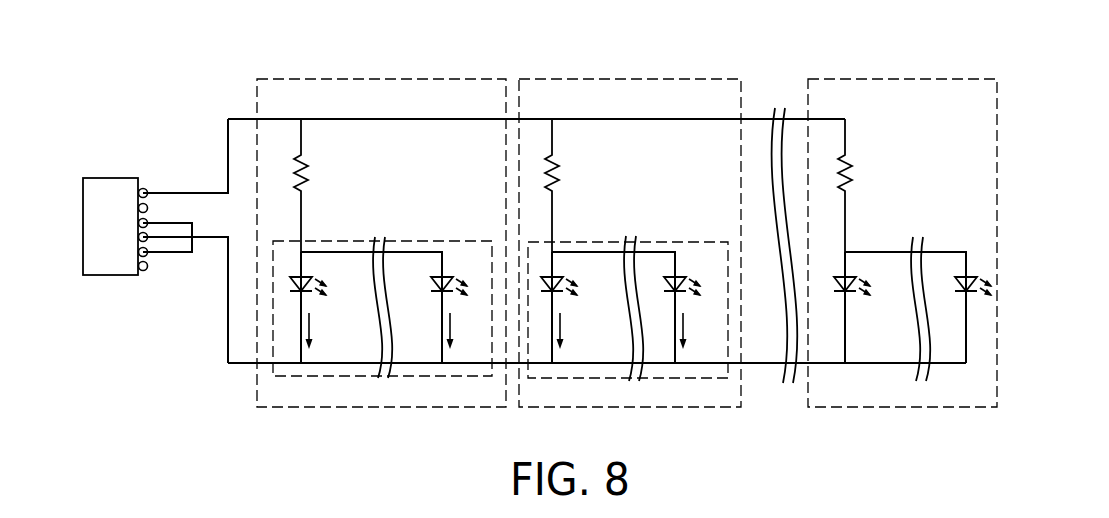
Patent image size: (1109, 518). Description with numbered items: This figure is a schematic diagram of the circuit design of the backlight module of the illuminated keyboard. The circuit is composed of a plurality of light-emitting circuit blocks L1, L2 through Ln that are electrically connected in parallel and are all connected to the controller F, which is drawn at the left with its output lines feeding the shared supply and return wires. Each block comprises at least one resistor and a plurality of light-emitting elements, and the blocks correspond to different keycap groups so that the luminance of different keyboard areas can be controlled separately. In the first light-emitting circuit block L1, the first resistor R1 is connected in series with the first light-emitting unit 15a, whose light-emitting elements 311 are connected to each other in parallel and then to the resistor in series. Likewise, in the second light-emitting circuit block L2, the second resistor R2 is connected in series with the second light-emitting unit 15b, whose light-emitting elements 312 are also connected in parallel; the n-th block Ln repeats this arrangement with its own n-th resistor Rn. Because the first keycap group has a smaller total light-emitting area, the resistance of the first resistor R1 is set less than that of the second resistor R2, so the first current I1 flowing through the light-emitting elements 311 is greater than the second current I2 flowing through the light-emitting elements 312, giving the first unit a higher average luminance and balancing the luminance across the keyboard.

The controller F is at (117, 178).
The first light-emitting circuit block L1 is at (380, 79).
The second light-emitting circuit block L2 is at (637, 79).
The n-th light-emitting circuit block Ln is at (902, 79).
The first resistor R1 is at (317, 185).
The second resistor R2 is at (567, 185).
The n-th resistor Rn is at (860, 185).
The first light-emitting unit 15a is at (435, 240).
The second light-emitting unit 15b is at (603, 237).
The light-emitting elements of the first light-emitting unit 311 is at (391, 275).
The light-emitting elements of the second light-emitting unit 312 is at (633, 275).
The first current I1 is at (390, 331).
The second current I2 is at (632, 331).